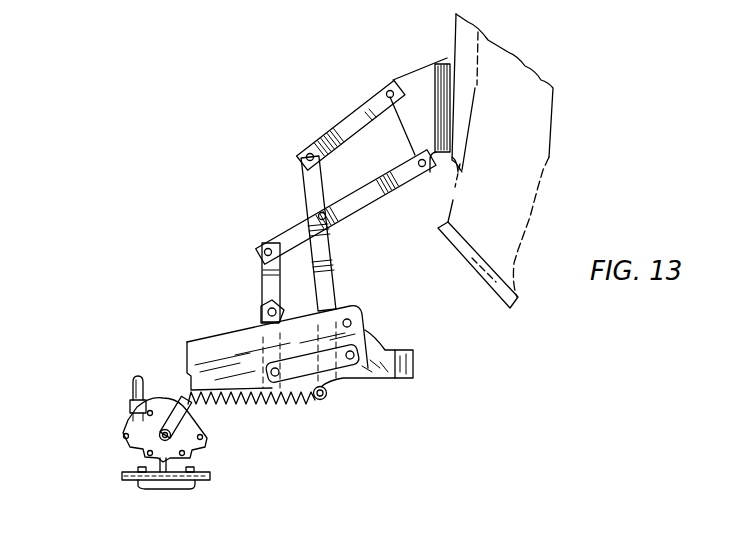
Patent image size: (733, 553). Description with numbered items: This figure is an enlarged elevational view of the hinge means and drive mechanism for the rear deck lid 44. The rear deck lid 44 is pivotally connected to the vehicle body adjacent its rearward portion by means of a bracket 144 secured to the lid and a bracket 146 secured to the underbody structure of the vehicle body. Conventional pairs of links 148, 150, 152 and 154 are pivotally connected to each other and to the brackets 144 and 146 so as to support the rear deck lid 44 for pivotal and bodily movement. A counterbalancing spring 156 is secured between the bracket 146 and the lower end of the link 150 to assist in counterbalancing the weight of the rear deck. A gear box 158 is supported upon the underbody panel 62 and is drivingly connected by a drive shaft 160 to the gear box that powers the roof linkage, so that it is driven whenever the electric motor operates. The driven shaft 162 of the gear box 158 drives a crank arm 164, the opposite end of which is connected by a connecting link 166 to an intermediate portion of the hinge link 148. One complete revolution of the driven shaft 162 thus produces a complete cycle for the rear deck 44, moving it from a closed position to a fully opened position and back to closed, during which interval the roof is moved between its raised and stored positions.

The rear deck lid 44 is at (528, 157).
The bracket 144 is at (423, 87).
The link 152 is at (348, 124).
The link 154 is at (378, 195).
The link 150 is at (330, 265).
The hinge link 148 is at (262, 270).
The connecting link 166 is at (258, 317).
The bracket 146 is at (358, 325).
The counterbalancing spring 156 is at (273, 405).
The drive shaft 160 is at (135, 398).
The gear box 158 is at (125, 437).
The crank arm 164 is at (180, 418).
The driven shaft 162 is at (177, 438).
The underbody panel 62 is at (182, 489).